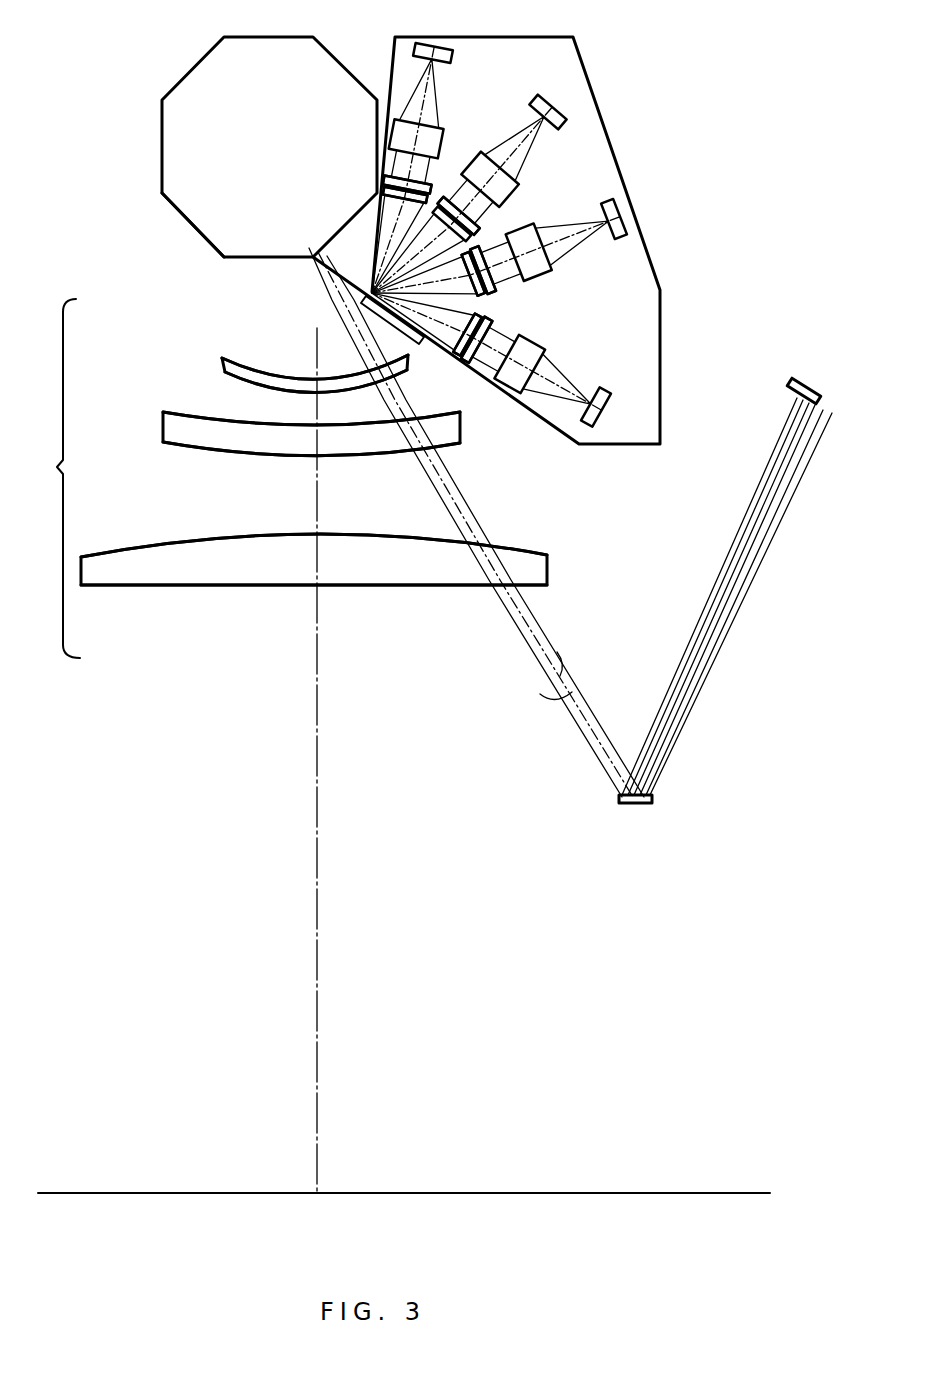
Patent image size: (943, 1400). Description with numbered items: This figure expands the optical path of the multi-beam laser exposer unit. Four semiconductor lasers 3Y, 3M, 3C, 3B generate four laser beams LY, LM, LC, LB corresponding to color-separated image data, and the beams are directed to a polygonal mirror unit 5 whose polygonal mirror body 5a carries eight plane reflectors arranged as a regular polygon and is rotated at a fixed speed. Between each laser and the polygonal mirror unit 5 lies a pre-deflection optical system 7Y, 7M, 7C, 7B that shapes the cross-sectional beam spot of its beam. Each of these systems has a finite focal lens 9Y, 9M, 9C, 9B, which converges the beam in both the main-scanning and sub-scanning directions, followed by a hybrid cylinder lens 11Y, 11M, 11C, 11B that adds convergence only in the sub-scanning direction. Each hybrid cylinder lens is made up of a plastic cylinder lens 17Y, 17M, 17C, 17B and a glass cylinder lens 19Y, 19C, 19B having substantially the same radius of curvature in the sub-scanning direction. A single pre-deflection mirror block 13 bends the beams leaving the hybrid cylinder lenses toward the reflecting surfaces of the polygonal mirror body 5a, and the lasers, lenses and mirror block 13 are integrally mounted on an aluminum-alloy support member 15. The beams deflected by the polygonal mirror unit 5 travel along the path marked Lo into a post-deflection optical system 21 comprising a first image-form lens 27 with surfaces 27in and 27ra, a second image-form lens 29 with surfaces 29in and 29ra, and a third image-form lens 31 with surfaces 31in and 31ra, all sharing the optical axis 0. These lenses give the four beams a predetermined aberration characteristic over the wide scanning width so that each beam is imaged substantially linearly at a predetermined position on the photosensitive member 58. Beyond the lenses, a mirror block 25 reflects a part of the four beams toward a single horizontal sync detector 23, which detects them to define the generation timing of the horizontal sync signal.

The polygonal mirror unit 5 is at (329, 72).
The polygonal mirror body 5a is at (192, 206).
The pre-deflection optical system 7Y is at (412, 80).
The pre-deflection optical system 7M is at (552, 140).
The pre-deflection optical system 7C is at (540, 208).
The pre-deflection optical system 7B is at (550, 410).
The first semiconductor laser 3Y is at (452, 62).
The second semiconductor laser 3M is at (543, 100).
The third semiconductor laser 3C is at (628, 212).
The fourth semiconductor laser 3B is at (610, 415).
The finite focal lens 9Y is at (397, 130).
The finite focal lens 9M is at (505, 175).
The finite focal lens 9C is at (555, 262).
The finite focal lens 9B is at (545, 345).
The hybrid cylinder lens 11Y is at (381, 183).
The hybrid cylinder lens 11M is at (480, 222).
The hybrid cylinder lens 11C is at (495, 300).
The hybrid cylinder lens 11B is at (478, 356).
The plastic cylinder lens 17Y is at (381, 175).
The plastic cylinder lens 17M is at (447, 200).
The plastic cylinder lens 17C is at (500, 285).
The plastic cylinder lens 17B is at (493, 380).
The glass cylinder lens 19Y is at (383, 196).
The glass cylinder lens 19C is at (487, 298).
The glass cylinder lens 19B is at (400, 365).
The first laser beam LY is at (420, 103).
The second laser beam LM is at (497, 150).
The third laser beam LC is at (560, 226).
The fourth laser beam LB is at (555, 380).
The optical axis of post-deflection optical system Lo is at (355, 313).
The pre-deflection mirror block 13 is at (369, 383).
The support member 15 is at (596, 102).
The post-deflection optical system 21 is at (56, 478).
The horizontal sync detector 23 is at (795, 380).
The mirror block 25 is at (633, 806).
The first image-form lens 27 is at (235, 366).
The incident surface of first imaging lens 27in is at (280, 360).
The exit surface of first imaging lens 27ra is at (258, 383).
The second image-form lens 29 is at (358, 455).
The incident surface of second imaging lens 29in is at (180, 420).
The exit surface of second imaging lens 29ra is at (218, 455).
The third image-form lens 31 is at (143, 585).
The incident surface of third imaging lens 31in is at (180, 545).
The exit surface of third imaging lens 31ra is at (235, 587).
The optical axis 0 is at (323, 939).
The photosensitive member 58 is at (190, 1195).